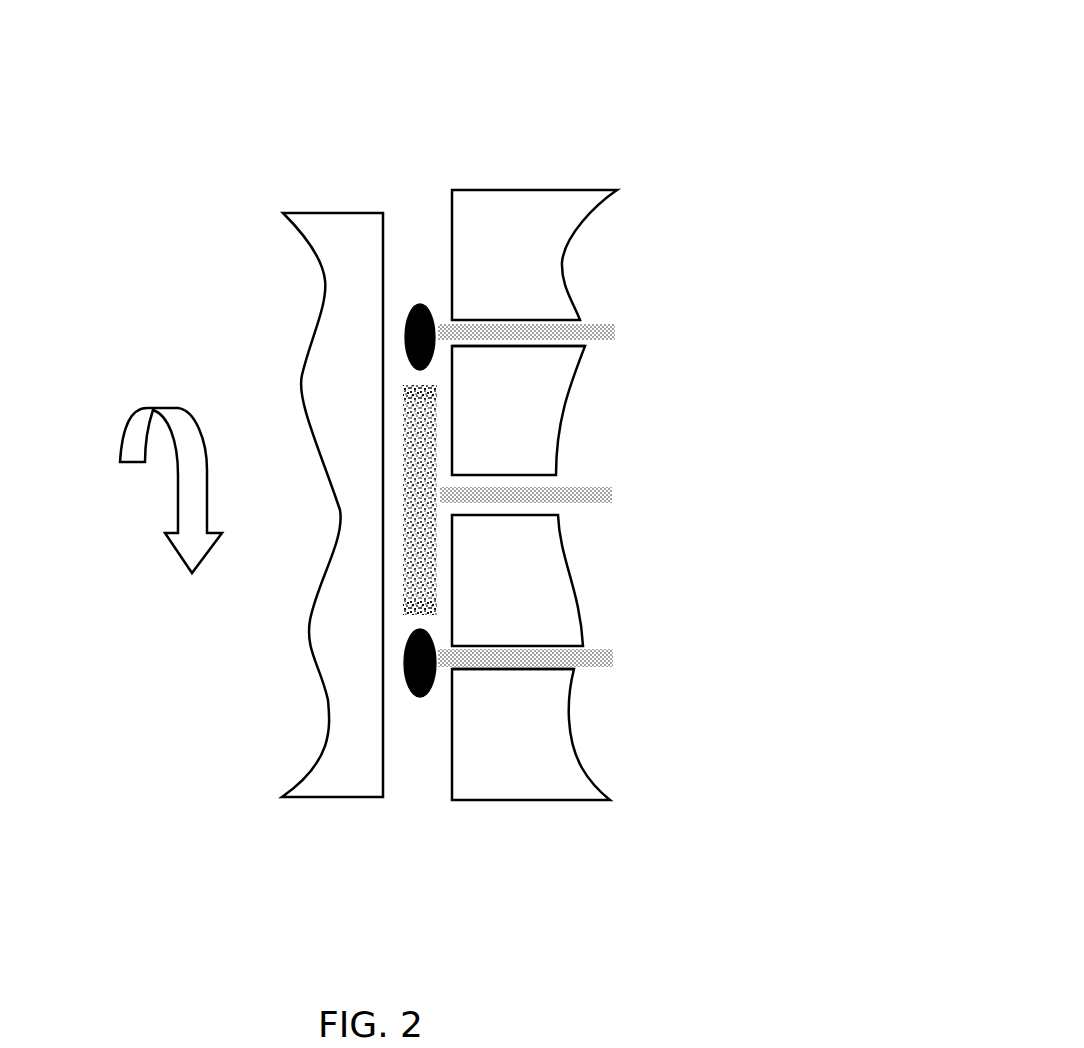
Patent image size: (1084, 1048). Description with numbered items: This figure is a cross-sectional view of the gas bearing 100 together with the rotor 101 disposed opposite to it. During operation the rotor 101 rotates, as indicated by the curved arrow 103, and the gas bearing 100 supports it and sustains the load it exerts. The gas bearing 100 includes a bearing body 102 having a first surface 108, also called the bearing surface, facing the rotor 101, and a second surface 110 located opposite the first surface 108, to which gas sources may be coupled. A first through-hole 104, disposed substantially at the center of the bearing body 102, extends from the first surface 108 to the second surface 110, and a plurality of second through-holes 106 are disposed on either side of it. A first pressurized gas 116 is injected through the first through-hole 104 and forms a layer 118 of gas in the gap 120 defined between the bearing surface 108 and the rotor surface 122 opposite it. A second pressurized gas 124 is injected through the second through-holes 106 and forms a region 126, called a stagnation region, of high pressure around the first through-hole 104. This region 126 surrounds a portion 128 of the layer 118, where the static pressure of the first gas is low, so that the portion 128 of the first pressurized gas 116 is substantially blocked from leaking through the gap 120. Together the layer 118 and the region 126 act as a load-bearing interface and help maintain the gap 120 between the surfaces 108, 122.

The gas bearing 100 is at (636, 60).
The rotor 101 is at (305, 200).
The bearing body 102 is at (537, 190).
The rotation of the rotor 103 is at (150, 405).
The first through-hole 104 is at (517, 515).
The second through-holes 106 is at (517, 345).
The first surface 108 is at (449, 360).
The second surface 110 is at (572, 740).
The first pressurized gas 116 is at (612, 492).
The layer of first pressurized gas 118 is at (410, 452).
The gap 120 is at (425, 730).
The rotor surface 122 is at (383, 737).
The second pressurized gas 124 is at (610, 335).
The region of second pressurized gas 126 is at (405, 333).
The portion of the layer 128 is at (410, 388).